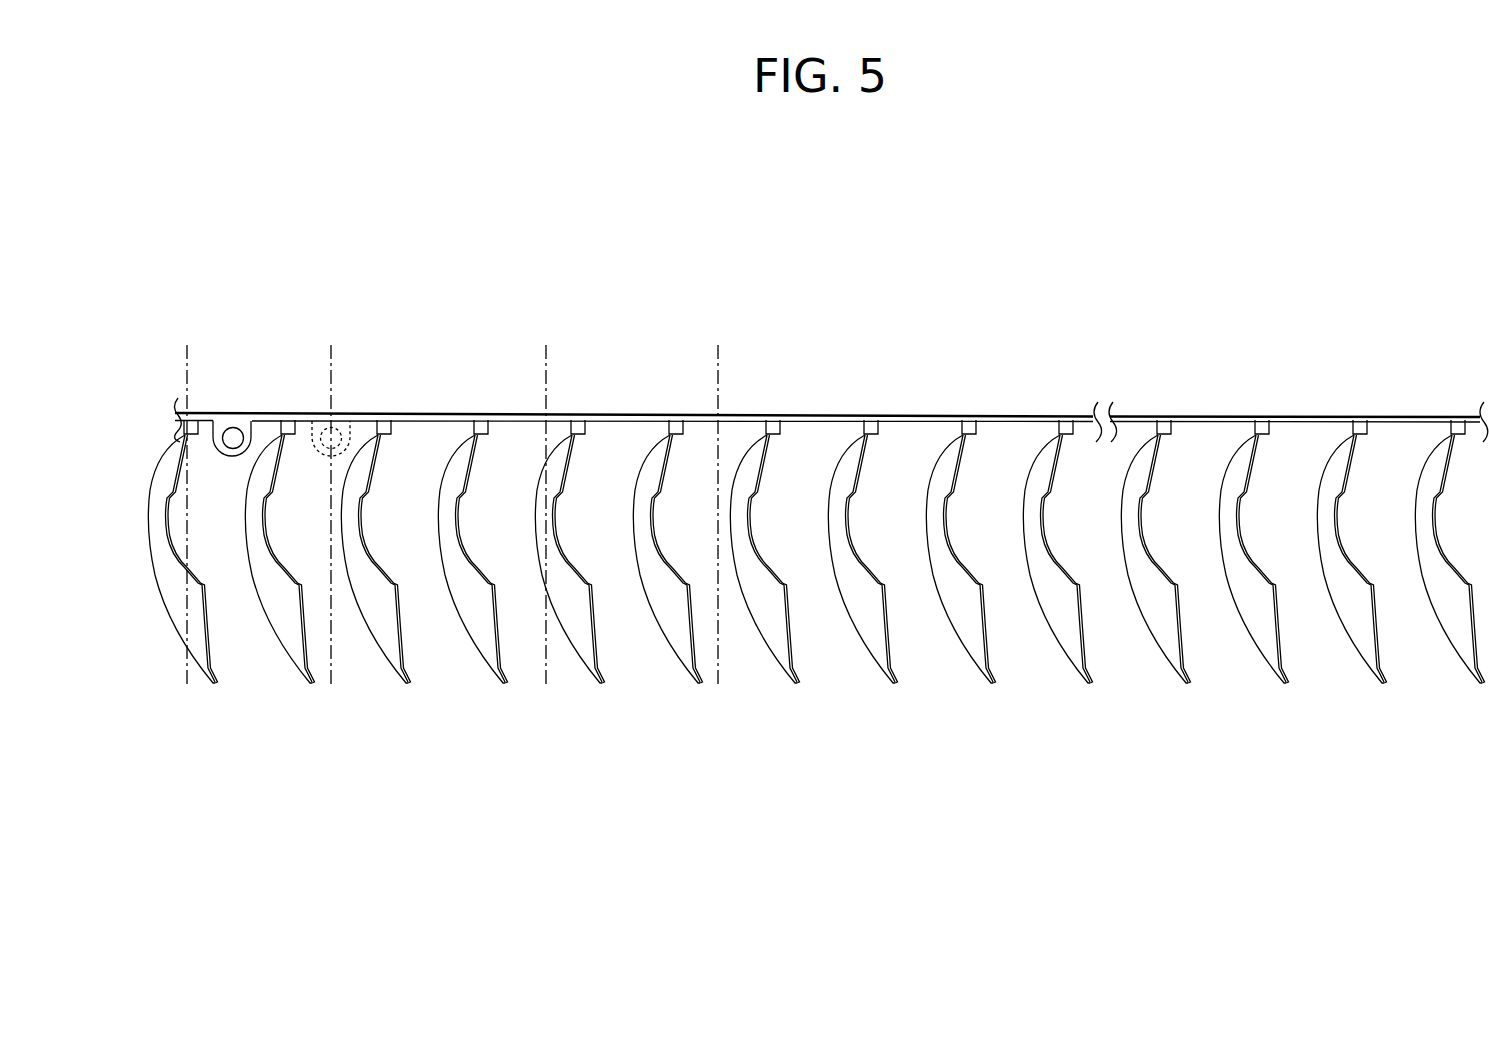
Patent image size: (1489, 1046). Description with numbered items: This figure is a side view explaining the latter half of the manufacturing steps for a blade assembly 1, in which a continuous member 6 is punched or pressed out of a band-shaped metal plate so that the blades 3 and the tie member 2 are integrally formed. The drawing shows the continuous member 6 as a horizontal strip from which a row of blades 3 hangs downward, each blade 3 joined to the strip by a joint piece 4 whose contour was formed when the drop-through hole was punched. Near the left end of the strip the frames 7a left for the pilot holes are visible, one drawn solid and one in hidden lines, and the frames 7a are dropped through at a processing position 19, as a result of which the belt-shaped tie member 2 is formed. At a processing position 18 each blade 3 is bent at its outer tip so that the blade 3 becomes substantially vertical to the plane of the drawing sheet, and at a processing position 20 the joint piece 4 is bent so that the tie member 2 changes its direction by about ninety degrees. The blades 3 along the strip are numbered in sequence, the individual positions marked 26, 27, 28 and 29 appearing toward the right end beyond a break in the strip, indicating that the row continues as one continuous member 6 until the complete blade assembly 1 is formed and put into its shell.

The blade assembly 1 is at (764, 527).
The tie member 2 is at (427, 418).
The blade 3 is at (816, 572).
The joint piece 4 is at (1057, 527).
The continuous member 6 is at (807, 416).
The frame for pilot hole 7a is at (244, 420).
The processing position 18 is at (188, 357).
The processing position 19 is at (332, 353).
The processing position 20 is at (547, 362).
The blade number 26 is at (1155, 527).
The blade number 27 is at (1253, 527).
The blade number 28 is at (1351, 527).
The blade number 29 is at (1449, 527).